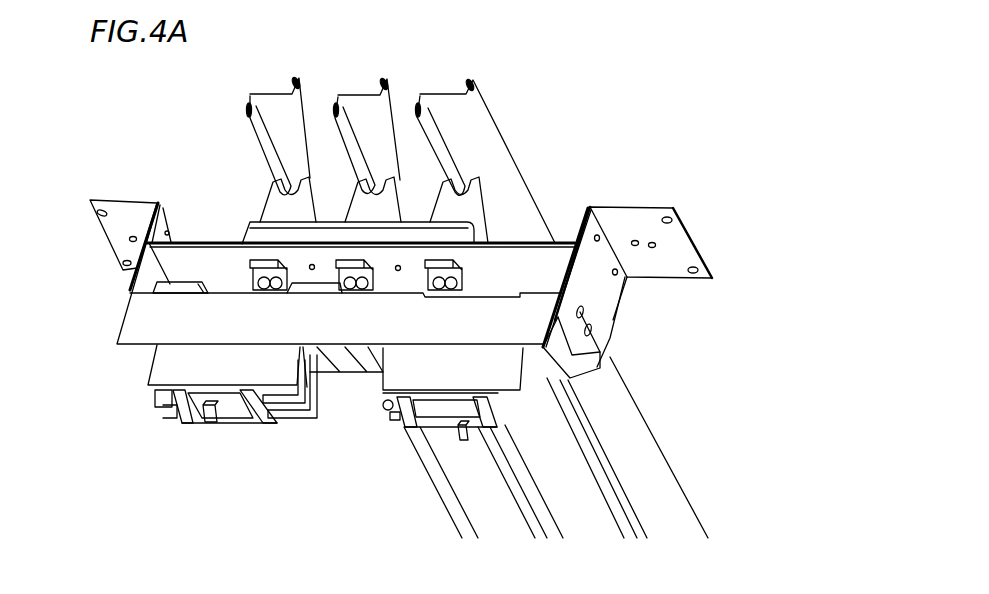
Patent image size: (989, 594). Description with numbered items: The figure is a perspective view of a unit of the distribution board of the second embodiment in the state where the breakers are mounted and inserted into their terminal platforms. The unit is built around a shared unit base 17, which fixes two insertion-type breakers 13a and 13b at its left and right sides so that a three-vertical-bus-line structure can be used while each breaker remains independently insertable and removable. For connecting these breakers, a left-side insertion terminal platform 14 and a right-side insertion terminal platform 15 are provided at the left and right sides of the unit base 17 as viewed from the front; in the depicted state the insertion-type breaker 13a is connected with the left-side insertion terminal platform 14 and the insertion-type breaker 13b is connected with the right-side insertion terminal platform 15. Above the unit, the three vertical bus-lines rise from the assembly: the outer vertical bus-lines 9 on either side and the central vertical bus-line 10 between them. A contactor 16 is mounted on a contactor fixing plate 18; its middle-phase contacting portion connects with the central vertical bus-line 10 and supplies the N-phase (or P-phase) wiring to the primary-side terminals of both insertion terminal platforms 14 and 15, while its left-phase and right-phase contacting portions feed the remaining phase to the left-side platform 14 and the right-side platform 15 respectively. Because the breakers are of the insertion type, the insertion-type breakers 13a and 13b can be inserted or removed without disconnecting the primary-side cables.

The vertical bus-line 9 is at (298, 76).
The central vertical bus-line 10 is at (386, 78).
The insertion-type breaker 13a is at (205, 420).
The insertion-type breaker 13b is at (458, 440).
The left-side insertion terminal platform 14 is at (152, 350).
The right-side insertion terminal platform 15 is at (567, 355).
The contactor 16 is at (477, 198).
The unit base 17 is at (632, 207).
The contactor fixing plate 18 is at (212, 240).